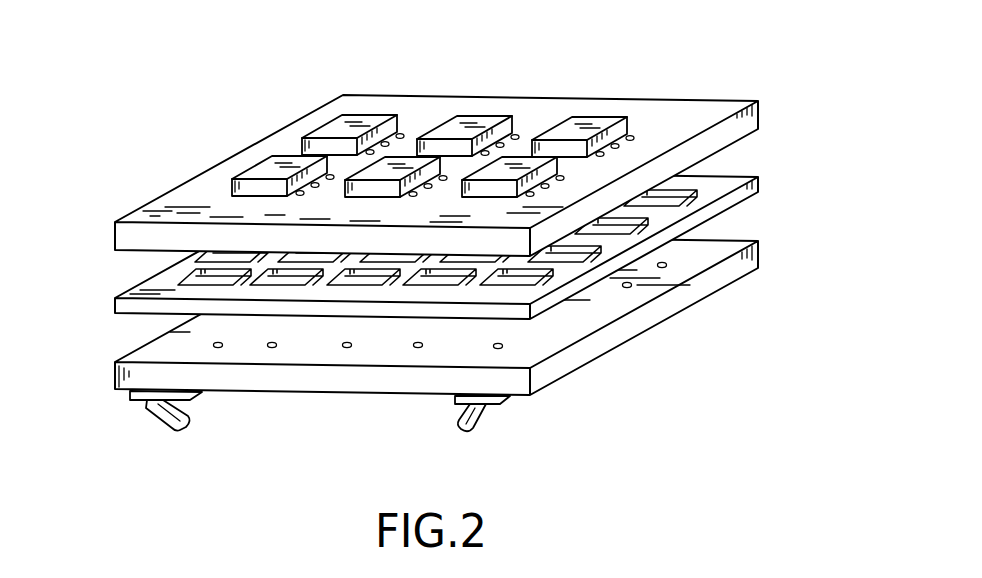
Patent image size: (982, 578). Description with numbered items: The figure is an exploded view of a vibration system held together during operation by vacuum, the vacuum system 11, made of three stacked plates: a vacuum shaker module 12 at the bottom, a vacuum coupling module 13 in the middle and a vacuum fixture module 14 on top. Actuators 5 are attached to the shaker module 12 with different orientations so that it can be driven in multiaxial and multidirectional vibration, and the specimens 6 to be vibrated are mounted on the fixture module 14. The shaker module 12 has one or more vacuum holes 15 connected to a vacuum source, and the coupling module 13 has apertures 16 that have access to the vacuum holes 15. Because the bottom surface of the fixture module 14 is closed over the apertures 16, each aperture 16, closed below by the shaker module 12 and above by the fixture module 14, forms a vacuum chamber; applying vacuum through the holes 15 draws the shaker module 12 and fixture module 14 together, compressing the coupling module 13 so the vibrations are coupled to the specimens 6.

The actuators 5 is at (473, 410).
The specimens 6 is at (628, 130).
The vacuum system 11 is at (77, 467).
The vacuum shaker module 12 is at (758, 247).
The vacuum coupling module 13 is at (758, 182).
The vacuum fixture module 14 is at (758, 107).
The vacuum holes 15 is at (358, 344).
The apertures 16 is at (183, 277).